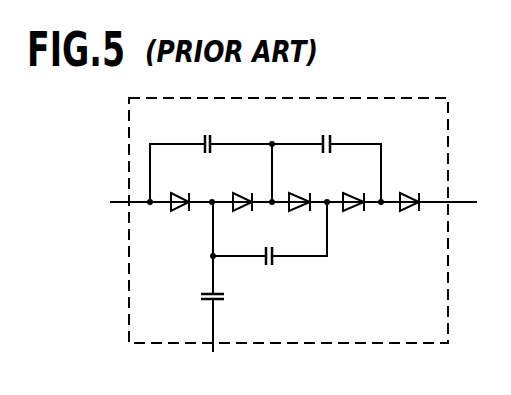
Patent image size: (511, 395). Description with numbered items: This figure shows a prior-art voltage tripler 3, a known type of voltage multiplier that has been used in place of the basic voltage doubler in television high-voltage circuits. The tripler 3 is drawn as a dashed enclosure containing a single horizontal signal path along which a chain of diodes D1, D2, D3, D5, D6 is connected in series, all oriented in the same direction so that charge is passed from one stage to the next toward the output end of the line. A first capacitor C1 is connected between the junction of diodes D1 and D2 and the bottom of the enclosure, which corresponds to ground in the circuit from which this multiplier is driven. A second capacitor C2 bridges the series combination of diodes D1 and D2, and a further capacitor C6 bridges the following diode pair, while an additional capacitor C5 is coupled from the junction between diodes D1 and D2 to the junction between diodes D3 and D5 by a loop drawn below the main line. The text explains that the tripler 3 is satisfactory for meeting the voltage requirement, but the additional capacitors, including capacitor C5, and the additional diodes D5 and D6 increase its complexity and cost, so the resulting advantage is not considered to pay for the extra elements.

The voltage tripler 3 is at (449, 185).
The first capacitor C1 is at (220, 302).
The second capacitor C2 is at (213, 141).
The additional capacitor C5 is at (275, 262).
The capacitor C6 is at (332, 141).
The diode D1 is at (182, 210).
The diode D2 is at (244, 210).
The diode D3 is at (301, 193).
The additional diode D5 is at (354, 193).
The additional diode D6 is at (411, 193).